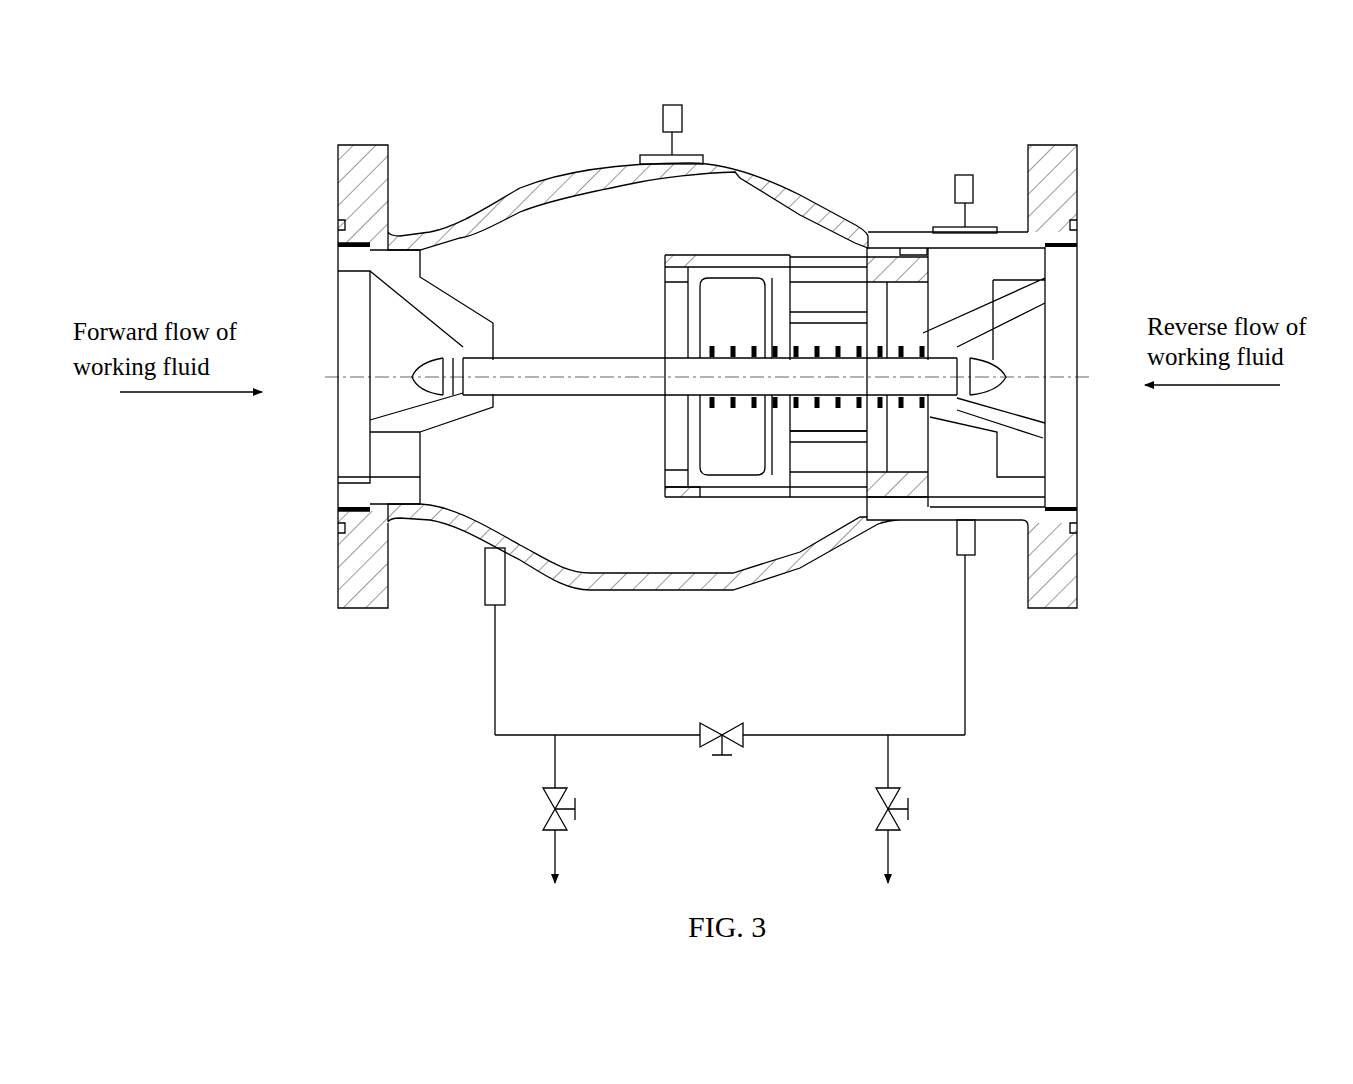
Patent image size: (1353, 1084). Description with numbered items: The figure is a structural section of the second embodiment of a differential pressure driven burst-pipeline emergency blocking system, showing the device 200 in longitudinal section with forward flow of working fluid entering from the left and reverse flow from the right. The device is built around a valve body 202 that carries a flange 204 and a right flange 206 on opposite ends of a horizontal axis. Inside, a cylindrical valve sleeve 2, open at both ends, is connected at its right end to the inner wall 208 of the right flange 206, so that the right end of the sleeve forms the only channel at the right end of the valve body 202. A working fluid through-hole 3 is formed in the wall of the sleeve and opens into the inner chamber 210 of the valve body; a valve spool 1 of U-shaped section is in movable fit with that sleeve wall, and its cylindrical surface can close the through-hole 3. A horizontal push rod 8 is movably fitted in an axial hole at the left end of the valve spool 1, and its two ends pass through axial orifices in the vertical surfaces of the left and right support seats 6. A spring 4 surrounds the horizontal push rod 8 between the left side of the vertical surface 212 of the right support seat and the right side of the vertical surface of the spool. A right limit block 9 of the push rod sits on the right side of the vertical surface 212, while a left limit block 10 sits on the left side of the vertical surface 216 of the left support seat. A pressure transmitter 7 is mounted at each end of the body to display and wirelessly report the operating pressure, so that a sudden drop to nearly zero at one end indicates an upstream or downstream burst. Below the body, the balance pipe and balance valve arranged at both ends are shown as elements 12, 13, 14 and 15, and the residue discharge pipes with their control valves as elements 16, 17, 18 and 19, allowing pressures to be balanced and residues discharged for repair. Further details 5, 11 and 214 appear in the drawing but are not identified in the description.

The device 200 is at (173, 103).
The valve body 202 is at (372, 162).
The flange 204 is at (370, 192).
The right flange 206 is at (1053, 160).
The inner wall 208 is at (868, 243).
The inner chamber 210 is at (590, 465).
The vertical surface 212 is at (1040, 290).
The spring 214 is at (690, 340).
The vertical surface 216 is at (462, 330).
The valve spool 1 is at (722, 255).
The cylindrical valve sleeve 2 is at (768, 252).
The working fluid through-hole 3 is at (837, 257).
The spring 4 is at (800, 420).
The inner wall 5 is at (513, 470).
The support seat 6 is at (385, 255).
The pressure sensor 7 is at (683, 125).
The horizontal push rod 8 is at (512, 352).
The right limit block 9 is at (978, 365).
The left limit block 10 is at (422, 362).
The bottom cap 11 is at (682, 483).
The outlet pressure tap 12 is at (960, 560).
The inlet pressure tap 13 is at (483, 580).
The bypass line 14 is at (632, 738).
The bypass valve 15 is at (722, 757).
The inlet drain valve 16 is at (545, 800).
The inlet drain outlet 17 is at (553, 880).
The outlet drain valve 18 is at (908, 800).
The outlet drain outlet 19 is at (890, 880).